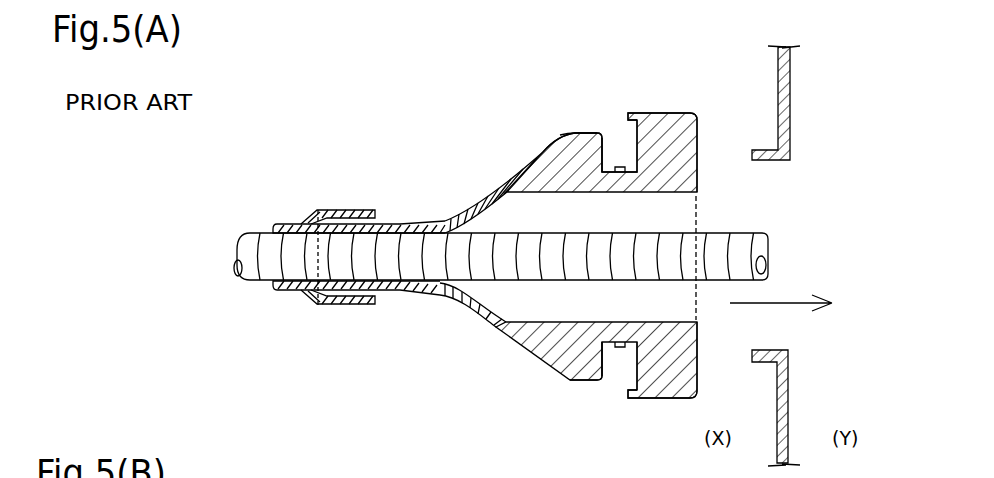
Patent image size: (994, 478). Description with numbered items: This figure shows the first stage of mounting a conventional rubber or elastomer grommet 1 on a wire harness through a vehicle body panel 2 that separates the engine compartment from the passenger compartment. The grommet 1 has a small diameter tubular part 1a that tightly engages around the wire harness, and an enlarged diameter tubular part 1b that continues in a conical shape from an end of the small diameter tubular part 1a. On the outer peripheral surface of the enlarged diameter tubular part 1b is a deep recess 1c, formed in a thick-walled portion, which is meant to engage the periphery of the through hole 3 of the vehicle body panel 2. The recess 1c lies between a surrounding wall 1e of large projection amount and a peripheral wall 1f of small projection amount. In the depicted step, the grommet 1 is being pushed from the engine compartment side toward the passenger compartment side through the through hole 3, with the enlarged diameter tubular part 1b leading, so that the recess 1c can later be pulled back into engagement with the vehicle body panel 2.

The grommet 1 is at (489, 212).
The small diameter tubular part 1a is at (428, 216).
The enlarged diameter tubular part 1b is at (545, 150).
The recess 1c is at (617, 166).
The surrounding wall 1e is at (655, 107).
The peripheral wall 1f is at (573, 130).
The vehicle body panel 2 is at (790, 108).
The through hole 3 is at (778, 162).